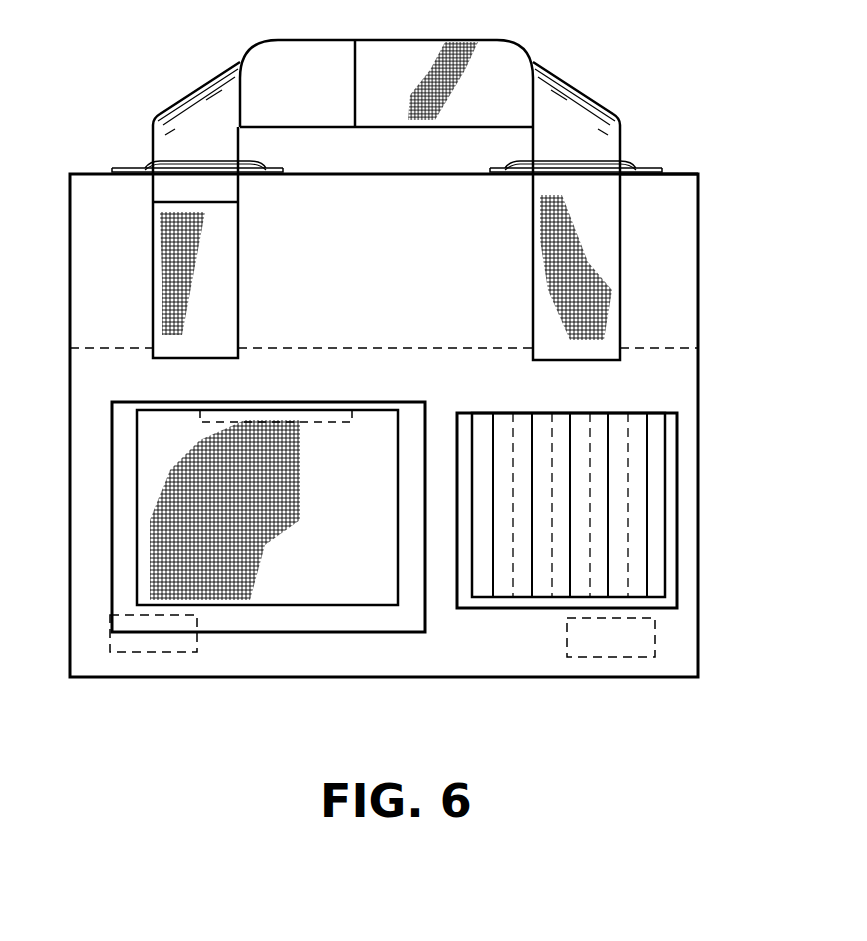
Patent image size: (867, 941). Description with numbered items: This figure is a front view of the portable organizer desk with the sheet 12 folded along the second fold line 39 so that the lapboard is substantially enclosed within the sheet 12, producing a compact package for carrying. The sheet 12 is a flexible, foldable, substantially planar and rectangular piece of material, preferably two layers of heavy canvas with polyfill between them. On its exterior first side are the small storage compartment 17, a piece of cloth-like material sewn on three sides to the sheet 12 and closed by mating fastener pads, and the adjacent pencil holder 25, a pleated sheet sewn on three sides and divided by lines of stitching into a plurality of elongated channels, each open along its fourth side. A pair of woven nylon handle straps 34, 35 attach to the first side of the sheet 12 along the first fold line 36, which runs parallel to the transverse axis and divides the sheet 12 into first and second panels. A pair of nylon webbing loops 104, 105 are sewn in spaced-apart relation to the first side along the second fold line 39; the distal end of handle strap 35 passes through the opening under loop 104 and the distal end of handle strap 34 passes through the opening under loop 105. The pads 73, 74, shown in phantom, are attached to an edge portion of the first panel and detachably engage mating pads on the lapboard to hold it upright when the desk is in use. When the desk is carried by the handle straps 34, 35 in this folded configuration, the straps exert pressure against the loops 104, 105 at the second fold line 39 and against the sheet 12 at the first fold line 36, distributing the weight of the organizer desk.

The sheet 12 is at (680, 247).
The small storage compartment 17 is at (118, 413).
The pencil holder 25 is at (673, 437).
The handle strap 34 is at (165, 287).
The handle strap 35 is at (608, 311).
The first fold line 36 is at (672, 352).
The second fold line 39 is at (685, 174).
The pad 73 is at (163, 645).
The pad 74 is at (616, 645).
The loop 104 is at (640, 170).
The loop 105 is at (140, 162).